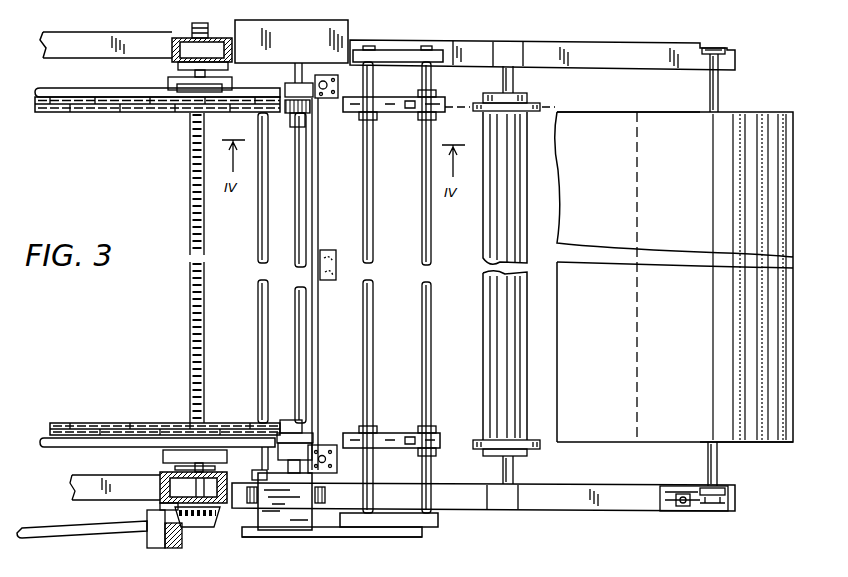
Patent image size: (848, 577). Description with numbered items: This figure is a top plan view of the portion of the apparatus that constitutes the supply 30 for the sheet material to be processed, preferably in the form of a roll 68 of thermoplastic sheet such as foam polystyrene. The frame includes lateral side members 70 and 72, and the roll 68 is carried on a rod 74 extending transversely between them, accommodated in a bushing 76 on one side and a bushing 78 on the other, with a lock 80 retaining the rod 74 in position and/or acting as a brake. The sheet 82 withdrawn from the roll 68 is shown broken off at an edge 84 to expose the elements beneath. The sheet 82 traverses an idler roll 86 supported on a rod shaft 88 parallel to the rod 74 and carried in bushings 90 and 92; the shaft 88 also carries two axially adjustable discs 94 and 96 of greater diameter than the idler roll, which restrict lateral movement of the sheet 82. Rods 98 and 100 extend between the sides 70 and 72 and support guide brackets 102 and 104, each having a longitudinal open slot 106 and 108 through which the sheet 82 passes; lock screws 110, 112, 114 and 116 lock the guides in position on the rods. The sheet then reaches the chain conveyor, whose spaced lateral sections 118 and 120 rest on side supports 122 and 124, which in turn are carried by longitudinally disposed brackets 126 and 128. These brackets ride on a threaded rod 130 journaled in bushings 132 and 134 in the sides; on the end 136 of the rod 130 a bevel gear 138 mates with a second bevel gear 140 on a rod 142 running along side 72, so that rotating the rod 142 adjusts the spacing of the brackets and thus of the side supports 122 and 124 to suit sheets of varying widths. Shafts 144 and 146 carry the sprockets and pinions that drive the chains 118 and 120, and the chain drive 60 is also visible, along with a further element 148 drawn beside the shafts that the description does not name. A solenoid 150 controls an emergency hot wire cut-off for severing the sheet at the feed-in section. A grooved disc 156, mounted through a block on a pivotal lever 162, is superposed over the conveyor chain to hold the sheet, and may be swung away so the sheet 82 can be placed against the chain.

The supply 30 is at (766, 108).
The chain drive 60 is at (352, 541).
The roll 68 is at (778, 445).
The lateral side member 70 is at (632, 43).
The lateral side member 72 is at (583, 509).
The rod 74 is at (709, 92).
The bushing 76 is at (718, 46).
The bushing 78 is at (718, 512).
The lock 80 is at (683, 512).
The sheet 82 is at (614, 112).
The edge 84 is at (557, 328).
The idler roll 86 is at (527, 215).
The rod shaft 88 is at (530, 46).
The bushing 90 is at (512, 42).
The bushing 92 is at (512, 509).
The axially adjustable disc 94 is at (530, 106).
The axially adjustable disc 96 is at (535, 449).
The rod 98 is at (373, 242).
The rod 100 is at (431, 236).
The guide bracket 102 is at (400, 97).
The guide bracket 104 is at (395, 448).
The open slot 106 is at (440, 115).
The open slot 108 is at (430, 430).
The lock screw 110 is at (360, 116).
The lock screw 112 is at (429, 94).
The lock screw 114 is at (359, 430).
The lock screw 116 is at (431, 454).
The lateral section 118 is at (108, 118).
The lateral section 120 is at (123, 417).
The side support 122 is at (134, 88).
The side support 124 is at (126, 447).
The bracket 126 is at (232, 86).
The bracket 128 is at (220, 450).
The threaded rod 130 is at (190, 328).
The bushing 132 is at (182, 38).
The bushing 134 is at (254, 530).
The end 136 is at (170, 488).
The bevel gear 138 is at (204, 528).
The bevel gear 140 is at (162, 552).
The rod 142 is at (72, 524).
The shaft 144 is at (262, 232).
The shaft 146 is at (300, 330).
The rod 148 is at (315, 232).
The solenoid 150 is at (331, 282).
The disc 156 is at (290, 420).
The lever 162 is at (310, 471).